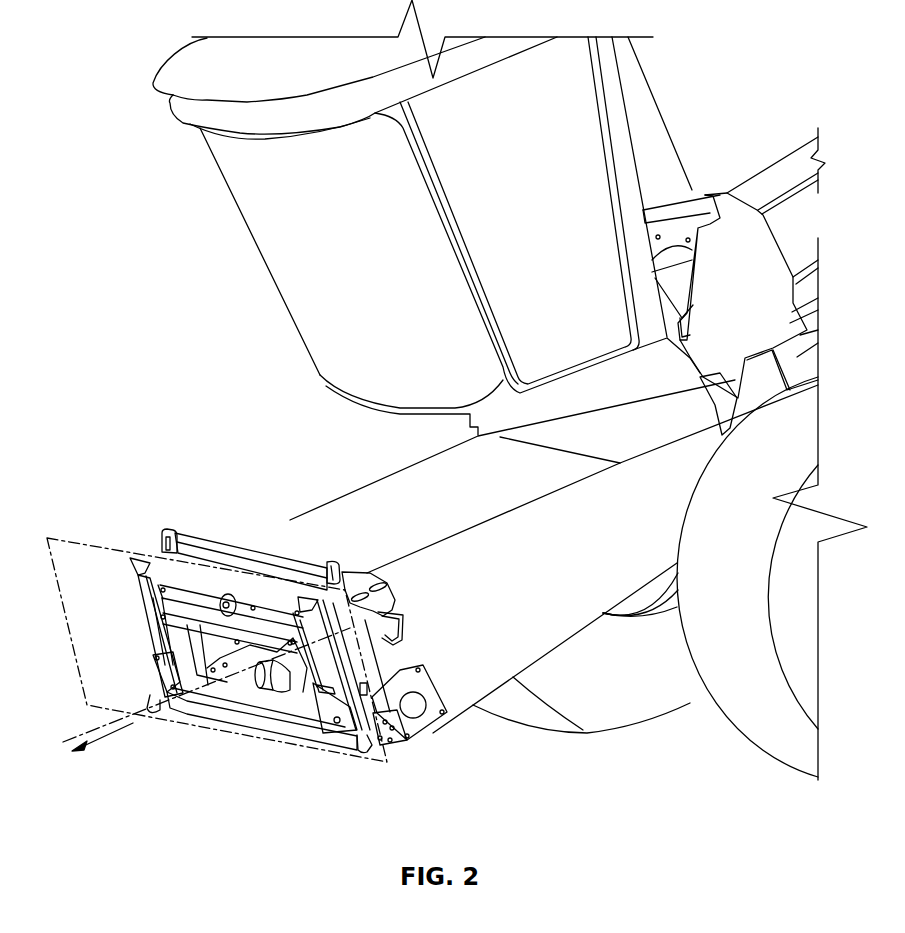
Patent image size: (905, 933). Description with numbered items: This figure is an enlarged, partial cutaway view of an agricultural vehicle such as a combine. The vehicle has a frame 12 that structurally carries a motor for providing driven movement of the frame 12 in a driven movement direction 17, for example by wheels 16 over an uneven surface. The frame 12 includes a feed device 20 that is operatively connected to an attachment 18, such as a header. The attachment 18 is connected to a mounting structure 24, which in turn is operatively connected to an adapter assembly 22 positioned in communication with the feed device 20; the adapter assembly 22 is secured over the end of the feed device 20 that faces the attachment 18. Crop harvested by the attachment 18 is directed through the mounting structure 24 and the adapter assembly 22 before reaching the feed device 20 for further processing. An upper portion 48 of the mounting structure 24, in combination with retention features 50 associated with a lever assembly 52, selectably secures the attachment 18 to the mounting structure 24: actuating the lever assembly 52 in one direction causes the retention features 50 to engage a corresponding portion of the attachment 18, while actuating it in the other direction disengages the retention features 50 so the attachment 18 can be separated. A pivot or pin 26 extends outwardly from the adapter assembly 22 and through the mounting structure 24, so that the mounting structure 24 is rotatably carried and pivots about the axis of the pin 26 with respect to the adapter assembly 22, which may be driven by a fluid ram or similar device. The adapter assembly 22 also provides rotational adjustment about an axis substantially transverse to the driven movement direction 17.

The frame 12 is at (740, 188).
The wheels 16 is at (748, 738).
The driven movement direction 17 is at (131, 724).
The attachment 18 is at (90, 543).
The feed device 20 is at (327, 510).
The adapter assembly 22 is at (370, 573).
The mounting structure 24 is at (147, 632).
The pin 26 is at (224, 594).
The upper portion 48 is at (166, 530).
The retention features 50 is at (372, 750).
The lever assembly 52 is at (417, 693).